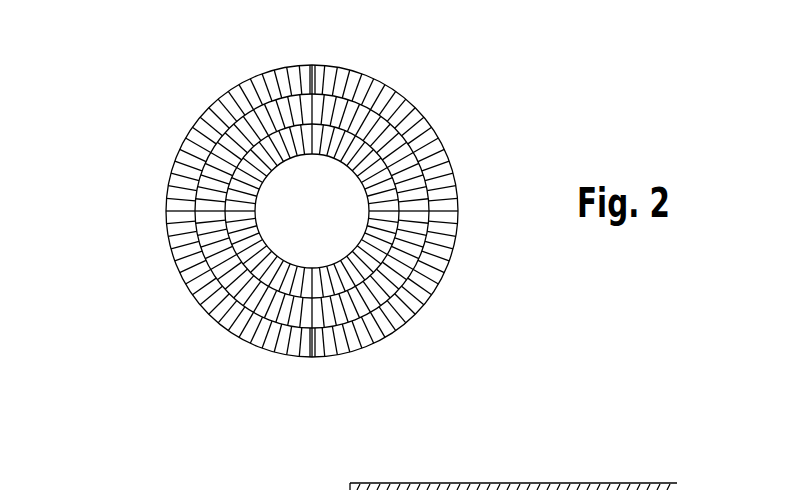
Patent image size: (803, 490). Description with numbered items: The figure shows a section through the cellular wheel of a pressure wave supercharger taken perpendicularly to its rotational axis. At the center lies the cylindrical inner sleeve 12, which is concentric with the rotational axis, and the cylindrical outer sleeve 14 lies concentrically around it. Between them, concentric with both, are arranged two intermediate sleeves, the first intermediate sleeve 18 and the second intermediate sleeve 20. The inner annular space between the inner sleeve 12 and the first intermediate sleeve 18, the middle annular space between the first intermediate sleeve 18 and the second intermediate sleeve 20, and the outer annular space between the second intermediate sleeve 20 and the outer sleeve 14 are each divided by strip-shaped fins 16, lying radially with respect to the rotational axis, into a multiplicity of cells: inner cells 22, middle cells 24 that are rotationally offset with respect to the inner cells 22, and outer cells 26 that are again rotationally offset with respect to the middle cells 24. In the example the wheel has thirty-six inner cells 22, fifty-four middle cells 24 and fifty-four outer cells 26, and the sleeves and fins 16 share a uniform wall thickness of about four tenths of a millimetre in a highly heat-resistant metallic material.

The inner sleeve 12 is at (226, 199).
The outer sleeve 14 is at (220, 98).
The fins 16 is at (376, 90).
The first intermediate sleeve 18 is at (290, 330).
The second intermediate sleeve 20 is at (325, 358).
The inner cells 22 is at (410, 298).
The middle cells 24 is at (408, 223).
The outer cells 26 is at (438, 205).